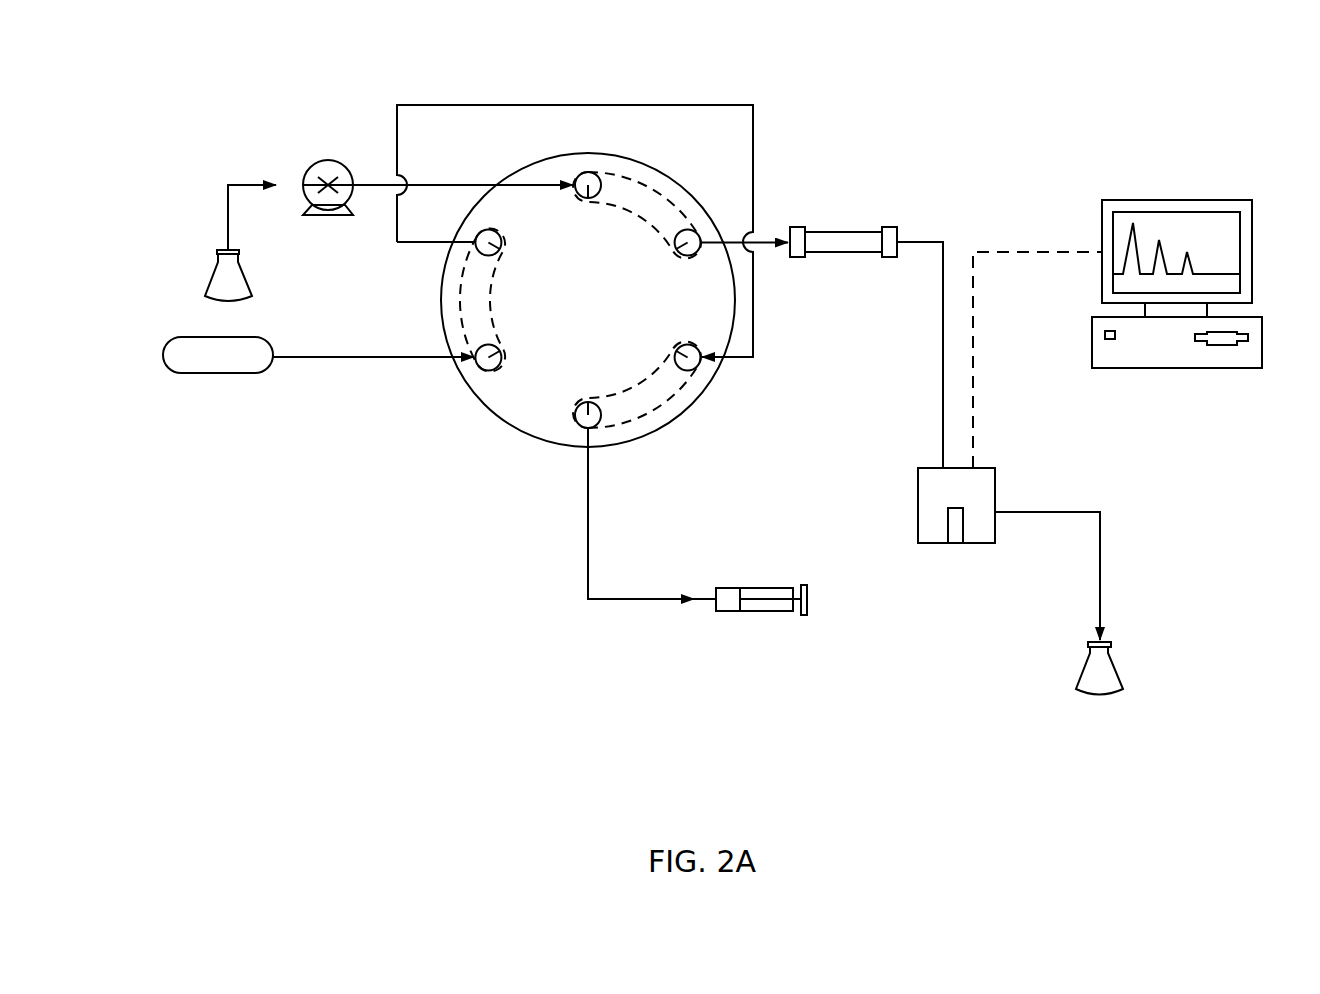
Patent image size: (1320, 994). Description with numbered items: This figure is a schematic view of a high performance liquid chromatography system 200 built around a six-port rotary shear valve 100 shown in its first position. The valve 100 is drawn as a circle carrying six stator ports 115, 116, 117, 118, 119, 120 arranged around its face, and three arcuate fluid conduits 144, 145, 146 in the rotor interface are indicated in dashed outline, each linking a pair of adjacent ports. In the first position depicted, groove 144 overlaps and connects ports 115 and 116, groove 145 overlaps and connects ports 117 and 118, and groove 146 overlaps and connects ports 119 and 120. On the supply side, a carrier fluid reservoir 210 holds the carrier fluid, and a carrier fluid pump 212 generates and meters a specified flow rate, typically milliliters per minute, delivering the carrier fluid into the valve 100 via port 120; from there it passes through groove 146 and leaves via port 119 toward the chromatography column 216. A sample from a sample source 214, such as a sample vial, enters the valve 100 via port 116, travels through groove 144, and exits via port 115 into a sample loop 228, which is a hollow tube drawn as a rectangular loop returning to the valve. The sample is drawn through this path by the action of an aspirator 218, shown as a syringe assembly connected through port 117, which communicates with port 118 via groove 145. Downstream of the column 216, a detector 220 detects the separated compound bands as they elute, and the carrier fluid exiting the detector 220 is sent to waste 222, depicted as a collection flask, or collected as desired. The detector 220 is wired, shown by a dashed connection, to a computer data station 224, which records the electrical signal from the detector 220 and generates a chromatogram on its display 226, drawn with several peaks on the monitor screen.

The high performance liquid chromatography system 200 is at (987, 73).
The six-port rotary shear valve 100 is at (481, 407).
The port 115 is at (500, 250).
The port 116 is at (500, 352).
The port 117 is at (580, 402).
The port 118 is at (673, 355).
The port 119 is at (678, 254).
The port 120 is at (588, 199).
The fluid conduit 144 is at (462, 297).
The fluid conduit 145 is at (676, 424).
The fluid conduit 146 is at (667, 167).
The carrier fluid reservoir 210 is at (240, 277).
The carrier fluid pump 212 is at (319, 162).
The sample source 214 is at (218, 373).
The chromatography column 216 is at (845, 227).
The aspirator 218 is at (755, 611).
The detector 220 is at (918, 490).
The waste 222 is at (1115, 672).
The computer data station 224 is at (1140, 198).
The display 226 is at (1218, 228).
The sample loop 228 is at (632, 105).